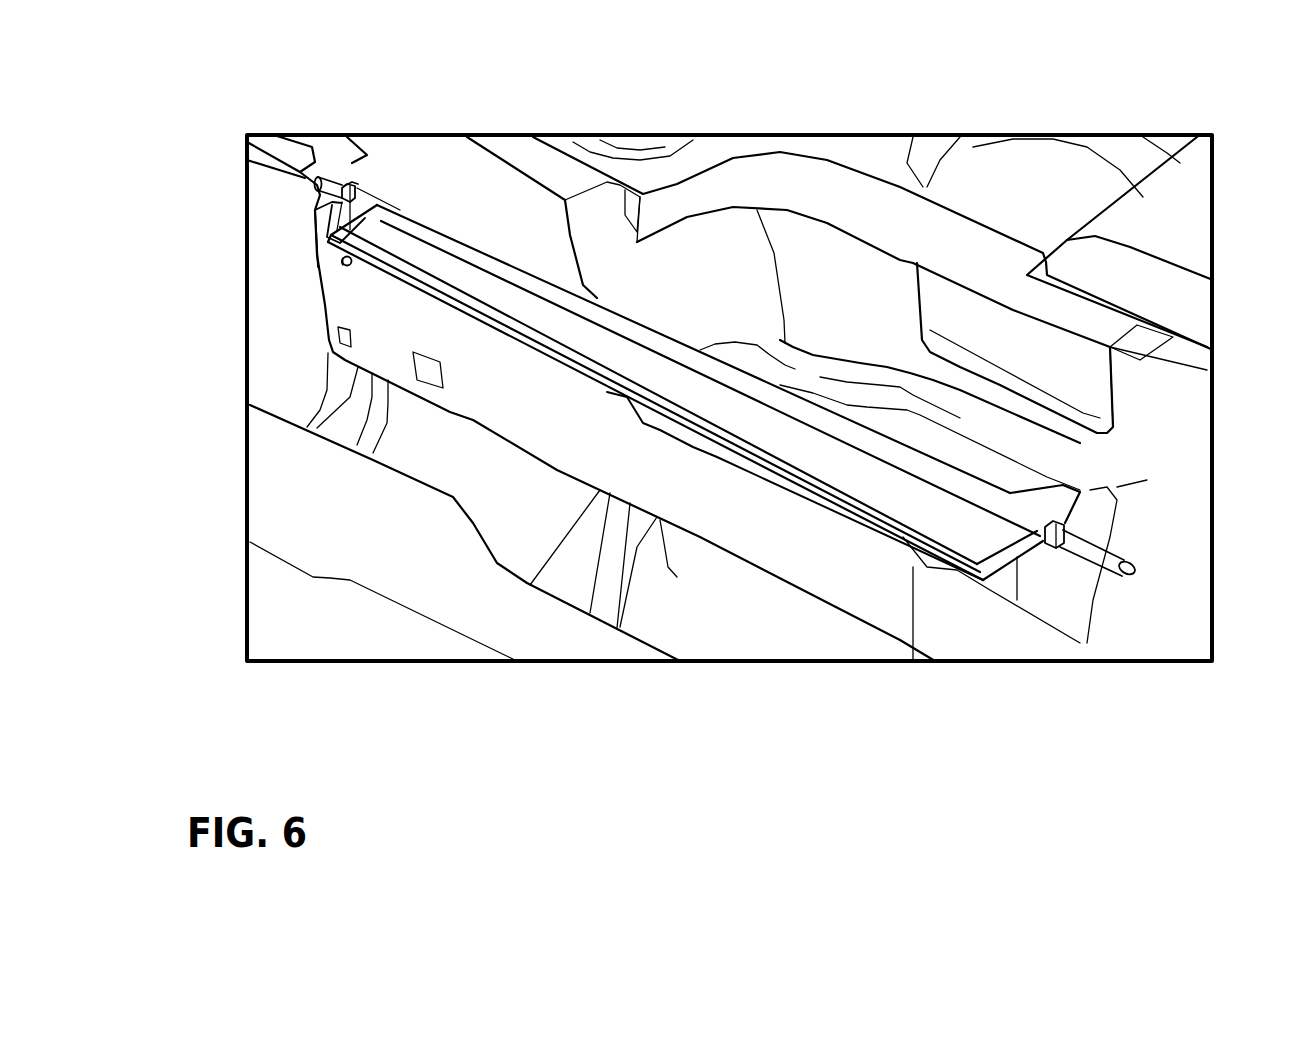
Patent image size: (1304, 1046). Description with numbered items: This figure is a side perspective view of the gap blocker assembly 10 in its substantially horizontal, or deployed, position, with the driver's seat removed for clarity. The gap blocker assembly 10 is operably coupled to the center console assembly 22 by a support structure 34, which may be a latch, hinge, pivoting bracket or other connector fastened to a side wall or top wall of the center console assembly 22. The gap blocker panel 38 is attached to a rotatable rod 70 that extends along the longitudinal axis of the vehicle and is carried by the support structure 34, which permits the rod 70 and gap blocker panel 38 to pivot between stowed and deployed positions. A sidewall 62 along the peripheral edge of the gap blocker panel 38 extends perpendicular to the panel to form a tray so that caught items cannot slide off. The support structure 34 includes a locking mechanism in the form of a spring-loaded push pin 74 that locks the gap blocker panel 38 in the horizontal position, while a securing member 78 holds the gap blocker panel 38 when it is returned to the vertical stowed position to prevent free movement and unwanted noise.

The gap blocker assembly 10 is at (717, 457).
The center console assembly 22 is at (1170, 392).
The support structure 34 is at (340, 197).
The gap blocker panel 38 is at (850, 470).
The sidewall 62 is at (372, 190).
The rotatable rod 70 is at (1120, 563).
The spring-loaded push pin 74 is at (350, 181).
The securing member 78 is at (342, 264).